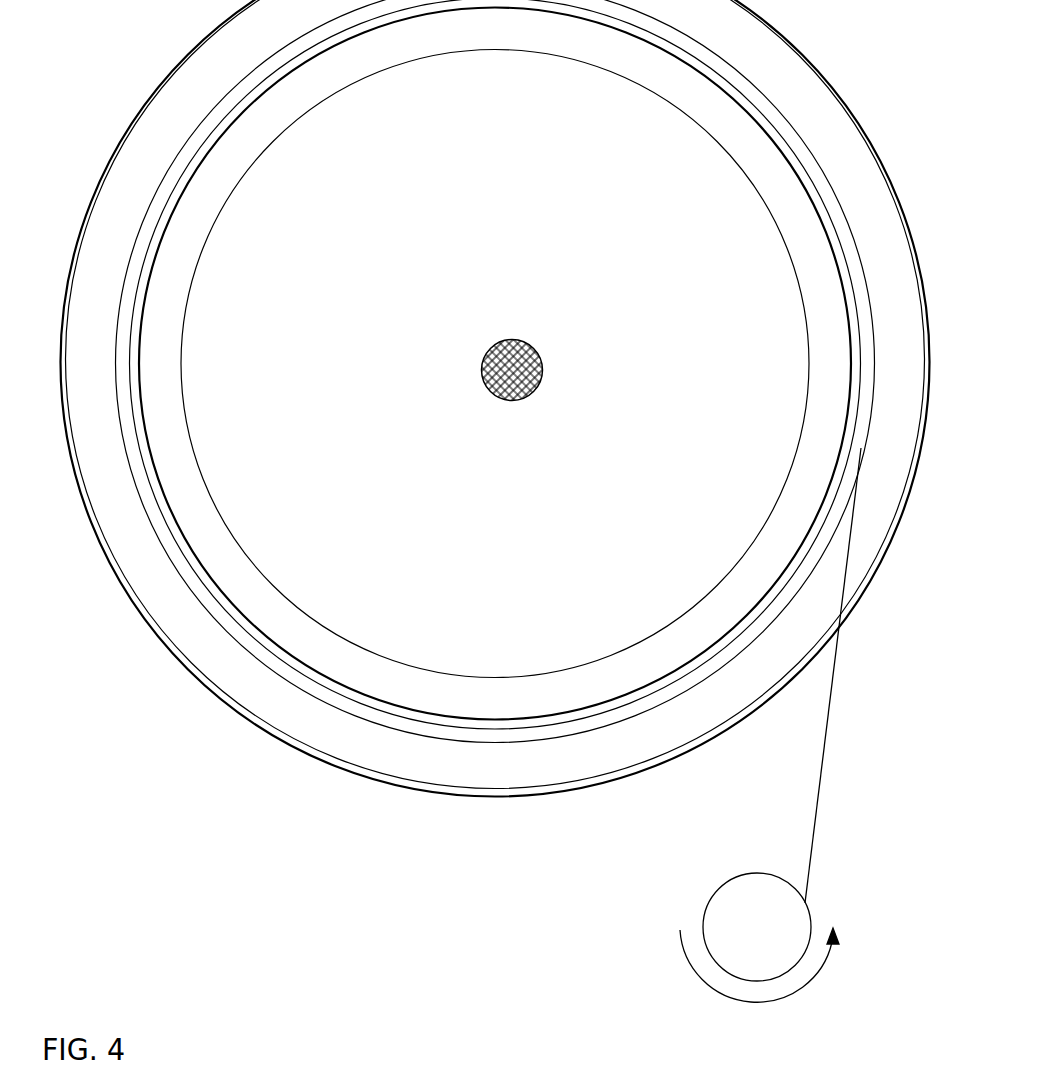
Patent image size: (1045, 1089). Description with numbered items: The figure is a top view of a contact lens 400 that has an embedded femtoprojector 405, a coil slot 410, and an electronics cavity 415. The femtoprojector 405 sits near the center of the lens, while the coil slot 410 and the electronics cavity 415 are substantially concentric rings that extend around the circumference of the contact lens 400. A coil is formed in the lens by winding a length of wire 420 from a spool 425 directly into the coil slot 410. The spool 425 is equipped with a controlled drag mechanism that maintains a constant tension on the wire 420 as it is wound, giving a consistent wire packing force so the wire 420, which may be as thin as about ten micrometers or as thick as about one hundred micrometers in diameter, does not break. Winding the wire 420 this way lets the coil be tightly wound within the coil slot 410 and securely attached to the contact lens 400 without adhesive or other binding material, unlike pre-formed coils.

The contact lens 400 is at (387, 296).
The femtoprojector 405 is at (534, 392).
The coil slot 410 is at (419, 730).
The electronics cavity 415 is at (283, 622).
The wire 420 is at (861, 675).
The spool 425 is at (788, 944).